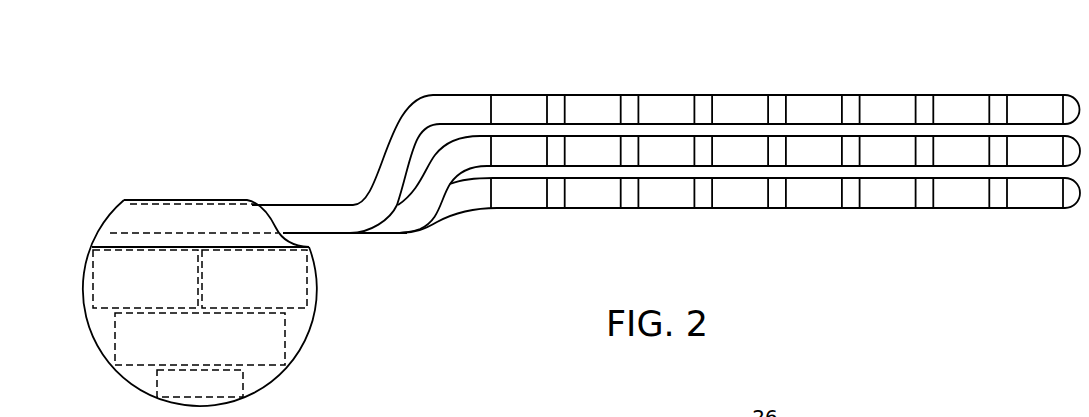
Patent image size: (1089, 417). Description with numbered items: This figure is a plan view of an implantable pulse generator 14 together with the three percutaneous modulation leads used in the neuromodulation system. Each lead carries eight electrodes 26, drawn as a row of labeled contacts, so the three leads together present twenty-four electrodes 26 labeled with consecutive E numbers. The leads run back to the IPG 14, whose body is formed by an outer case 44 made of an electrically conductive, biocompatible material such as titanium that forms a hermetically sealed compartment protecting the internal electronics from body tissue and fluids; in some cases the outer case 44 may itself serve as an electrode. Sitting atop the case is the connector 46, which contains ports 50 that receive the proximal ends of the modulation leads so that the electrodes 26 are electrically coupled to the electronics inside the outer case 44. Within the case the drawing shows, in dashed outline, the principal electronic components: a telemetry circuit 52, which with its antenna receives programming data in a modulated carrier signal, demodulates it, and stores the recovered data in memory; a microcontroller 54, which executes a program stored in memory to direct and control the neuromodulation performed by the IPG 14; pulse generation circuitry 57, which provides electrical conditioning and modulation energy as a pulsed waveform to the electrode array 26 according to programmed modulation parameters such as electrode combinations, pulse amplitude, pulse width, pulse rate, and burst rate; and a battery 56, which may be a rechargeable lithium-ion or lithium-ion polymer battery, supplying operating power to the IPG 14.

The implantable pulse generator 14 is at (125, 158).
The electrodes 26 is at (669, 94).
The outer case 44 is at (293, 363).
The connector 46 is at (200, 200).
The ports 50 is at (112, 232).
The telemetry circuit 52 is at (308, 285).
The microcontroller 54 is at (93, 283).
The battery 56 is at (157, 382).
The pulse generation circuitry 57 is at (115, 337).